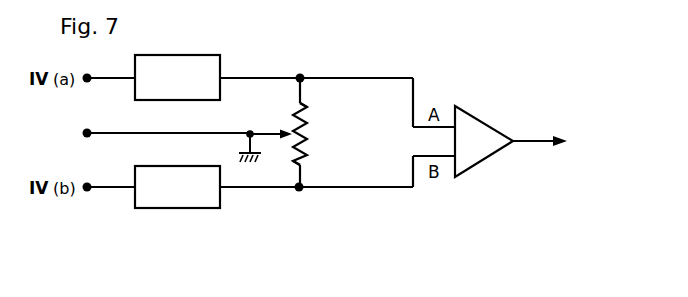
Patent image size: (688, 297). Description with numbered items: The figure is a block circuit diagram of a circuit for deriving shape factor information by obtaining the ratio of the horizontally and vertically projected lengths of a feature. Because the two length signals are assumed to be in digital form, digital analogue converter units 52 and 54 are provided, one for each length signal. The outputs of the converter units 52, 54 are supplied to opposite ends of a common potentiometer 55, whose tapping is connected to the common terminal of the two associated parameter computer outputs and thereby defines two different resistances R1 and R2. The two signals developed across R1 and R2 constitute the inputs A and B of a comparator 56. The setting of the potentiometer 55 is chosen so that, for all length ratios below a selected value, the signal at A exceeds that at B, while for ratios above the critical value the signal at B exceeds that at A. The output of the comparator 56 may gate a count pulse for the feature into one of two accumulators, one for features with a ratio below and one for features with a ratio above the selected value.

The digital analogue converter unit 52 is at (194, 55).
The digital analogue converter unit 54 is at (171, 209).
The common potentiometer 55 is at (306, 122).
The comparator 56 is at (499, 130).
The resistance R1 is at (292, 113).
The resistance R2 is at (292, 156).